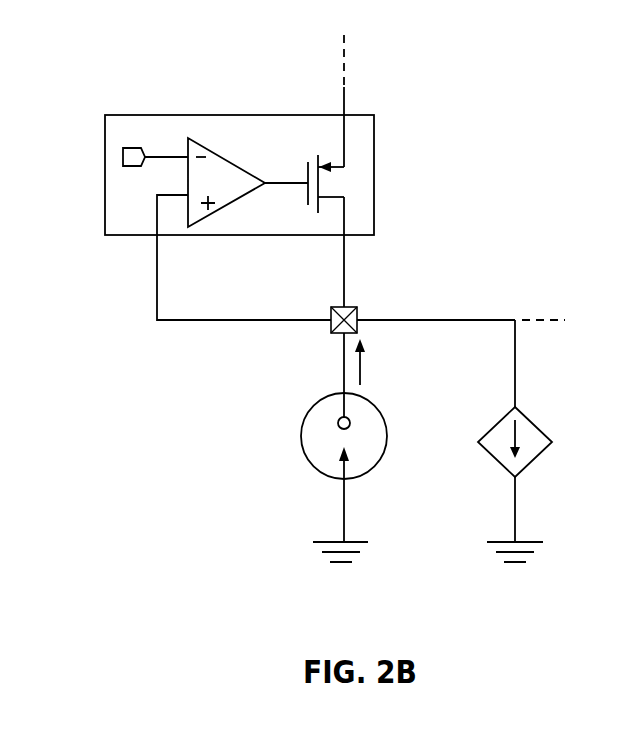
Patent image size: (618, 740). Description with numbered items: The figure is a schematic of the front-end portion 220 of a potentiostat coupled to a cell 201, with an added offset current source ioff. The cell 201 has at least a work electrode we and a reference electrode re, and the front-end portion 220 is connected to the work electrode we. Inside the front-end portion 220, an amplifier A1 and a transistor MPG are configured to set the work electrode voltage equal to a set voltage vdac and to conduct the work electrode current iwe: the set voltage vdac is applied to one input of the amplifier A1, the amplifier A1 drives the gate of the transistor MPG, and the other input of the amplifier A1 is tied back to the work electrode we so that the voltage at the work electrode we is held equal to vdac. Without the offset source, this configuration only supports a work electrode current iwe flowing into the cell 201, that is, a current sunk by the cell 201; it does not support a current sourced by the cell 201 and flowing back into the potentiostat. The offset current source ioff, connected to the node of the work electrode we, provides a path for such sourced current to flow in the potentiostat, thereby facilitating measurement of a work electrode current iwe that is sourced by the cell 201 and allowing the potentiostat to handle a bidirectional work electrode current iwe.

The front-end portion 220 is at (164, 112).
The cell 201 is at (290, 437).
The amplifier A1 is at (226, 182).
The transistor MPG is at (298, 165).
The set voltage vdac is at (150, 142).
The work electrode we is at (328, 311).
The work electrode current iwe is at (385, 362).
The reference electrode re is at (333, 525).
The offset current source ioff is at (538, 441).